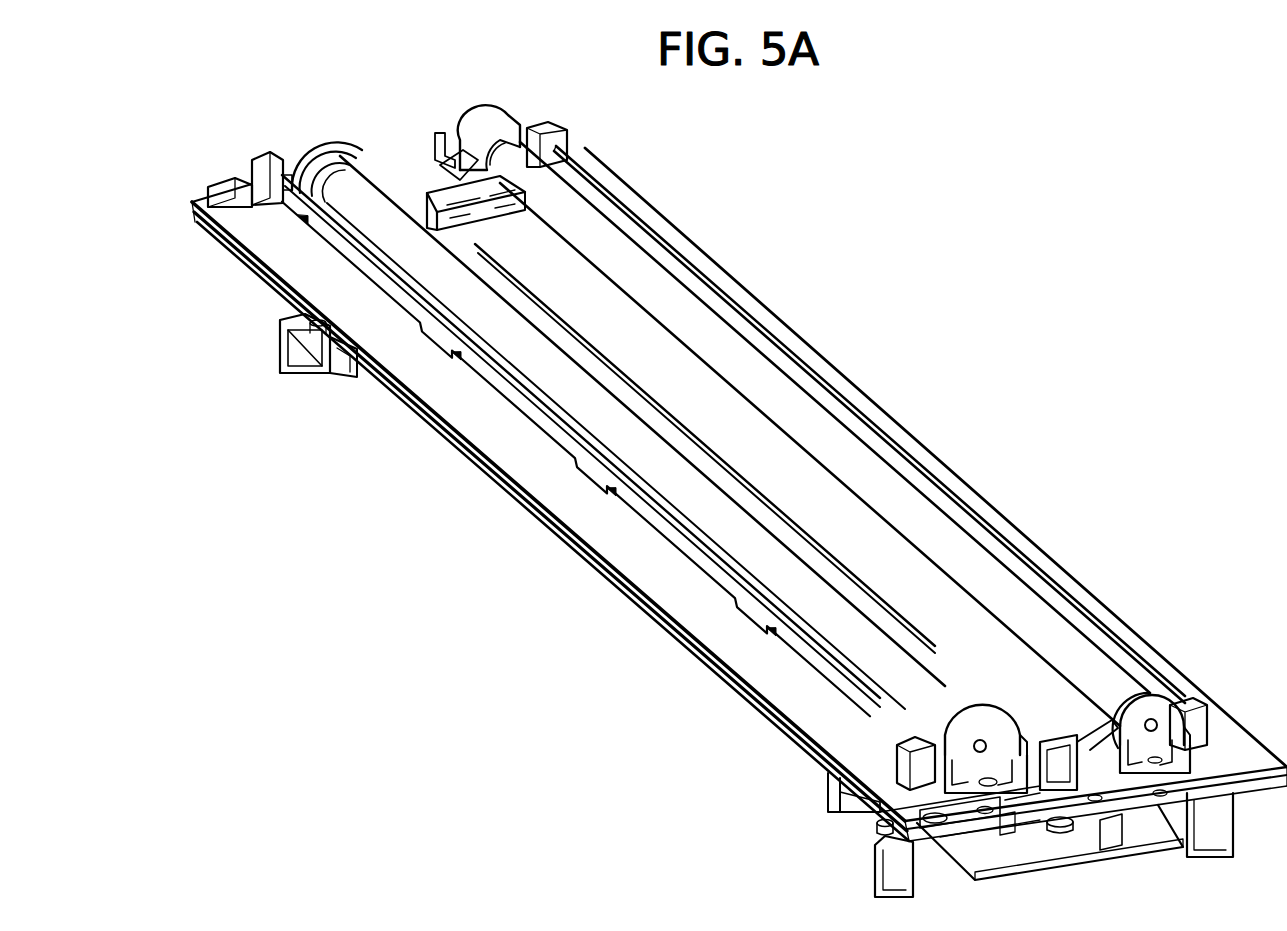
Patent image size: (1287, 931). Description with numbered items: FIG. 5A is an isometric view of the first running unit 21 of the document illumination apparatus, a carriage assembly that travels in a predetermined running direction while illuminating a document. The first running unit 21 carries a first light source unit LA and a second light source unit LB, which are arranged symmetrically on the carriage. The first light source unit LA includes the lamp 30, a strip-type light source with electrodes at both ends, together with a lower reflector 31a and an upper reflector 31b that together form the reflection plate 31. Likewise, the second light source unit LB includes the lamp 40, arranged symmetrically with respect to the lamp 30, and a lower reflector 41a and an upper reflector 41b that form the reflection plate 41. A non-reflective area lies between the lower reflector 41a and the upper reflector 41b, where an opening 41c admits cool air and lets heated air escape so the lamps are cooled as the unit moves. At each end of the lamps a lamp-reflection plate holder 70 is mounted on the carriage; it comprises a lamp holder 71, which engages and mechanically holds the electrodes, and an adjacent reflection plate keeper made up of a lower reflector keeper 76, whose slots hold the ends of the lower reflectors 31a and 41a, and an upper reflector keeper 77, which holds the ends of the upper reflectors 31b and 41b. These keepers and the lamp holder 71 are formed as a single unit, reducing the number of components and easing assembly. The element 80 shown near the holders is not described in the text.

The first running unit 21 is at (758, 216).
The lamp 30 is at (825, 445).
The reflection plate 31 is at (900, 398).
The lower reflector 31a is at (948, 600).
The upper reflector 31b is at (758, 300).
The first light source unit LA is at (958, 458).
The second light source unit LB is at (660, 553).
The lamp 40 is at (648, 528).
The reflection plate 41 is at (739, 540).
The lower reflector 41a is at (432, 365).
The upper reflector 41b is at (345, 240).
The opening 41c is at (345, 370).
The lamp-reflection plate holder 70 is at (292, 136).
The lamp holder 71 is at (476, 125).
The lower reflector keeper 76 is at (430, 200).
The upper reflector keeper 77 is at (258, 170).
The lower plate 80 is at (700, 645).